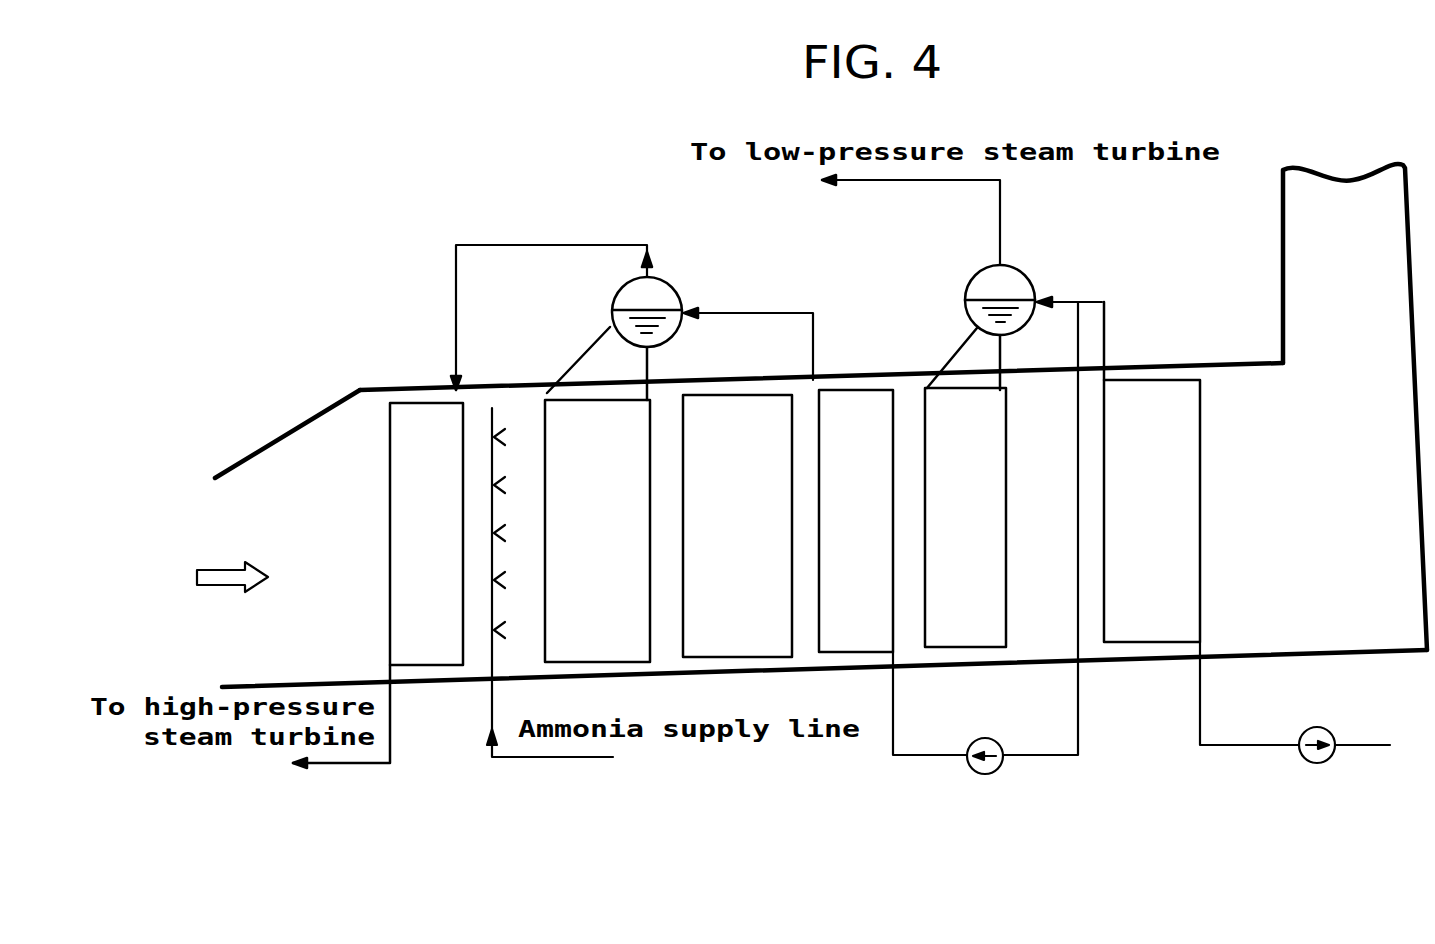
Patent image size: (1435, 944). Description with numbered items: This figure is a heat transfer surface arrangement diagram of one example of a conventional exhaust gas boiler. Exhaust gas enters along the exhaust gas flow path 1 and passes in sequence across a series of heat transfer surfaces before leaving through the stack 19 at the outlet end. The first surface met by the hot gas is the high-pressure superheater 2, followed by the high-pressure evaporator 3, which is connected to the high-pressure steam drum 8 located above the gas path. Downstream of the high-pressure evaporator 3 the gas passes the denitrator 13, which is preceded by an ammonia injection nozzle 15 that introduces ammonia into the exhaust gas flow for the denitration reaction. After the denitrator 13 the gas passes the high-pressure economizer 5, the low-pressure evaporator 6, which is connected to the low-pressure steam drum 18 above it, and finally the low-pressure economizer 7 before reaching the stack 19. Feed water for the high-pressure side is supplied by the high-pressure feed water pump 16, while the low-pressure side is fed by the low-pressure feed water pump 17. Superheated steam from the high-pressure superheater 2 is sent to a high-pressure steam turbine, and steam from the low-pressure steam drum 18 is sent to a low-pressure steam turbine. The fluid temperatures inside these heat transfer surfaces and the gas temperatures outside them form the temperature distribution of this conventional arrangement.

The exhaust gas flow path 1 is at (290, 455).
The high-pressure superheater 2 is at (390, 513).
The high-pressure evaporator 3 is at (597, 398).
The high-pressure economizer 5 is at (855, 395).
The low-pressure evaporator 6 is at (1007, 449).
The low-pressure economizer 7 is at (1203, 452).
The high-pressure steam drum 8 is at (665, 280).
The denitrator 13 is at (725, 393).
The ammonia injection nozzle 15 is at (490, 462).
The high-pressure feed water pump 16 is at (985, 776).
The low-pressure feed water pump 17 is at (1318, 765).
The low-pressure steam drum 18 is at (1030, 278).
The stack 19 is at (1283, 262).